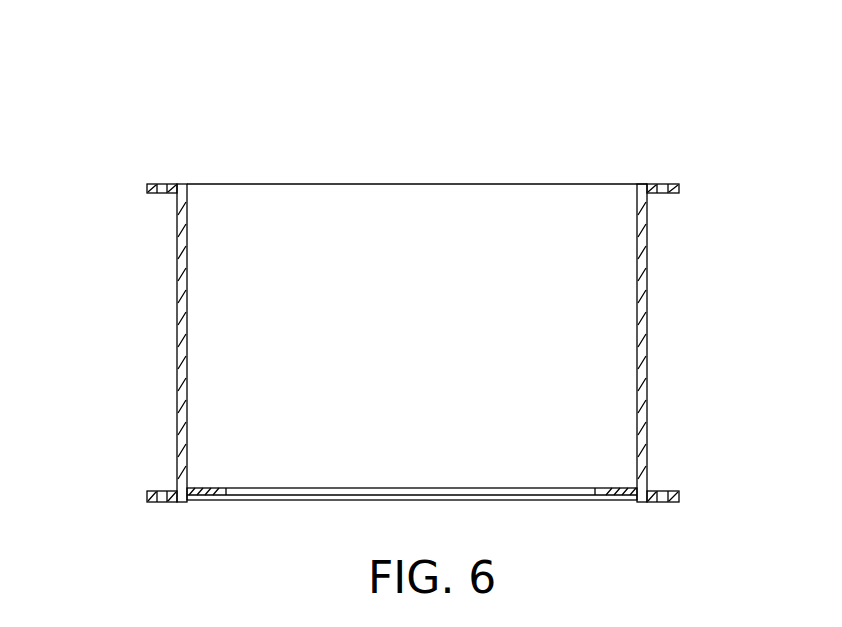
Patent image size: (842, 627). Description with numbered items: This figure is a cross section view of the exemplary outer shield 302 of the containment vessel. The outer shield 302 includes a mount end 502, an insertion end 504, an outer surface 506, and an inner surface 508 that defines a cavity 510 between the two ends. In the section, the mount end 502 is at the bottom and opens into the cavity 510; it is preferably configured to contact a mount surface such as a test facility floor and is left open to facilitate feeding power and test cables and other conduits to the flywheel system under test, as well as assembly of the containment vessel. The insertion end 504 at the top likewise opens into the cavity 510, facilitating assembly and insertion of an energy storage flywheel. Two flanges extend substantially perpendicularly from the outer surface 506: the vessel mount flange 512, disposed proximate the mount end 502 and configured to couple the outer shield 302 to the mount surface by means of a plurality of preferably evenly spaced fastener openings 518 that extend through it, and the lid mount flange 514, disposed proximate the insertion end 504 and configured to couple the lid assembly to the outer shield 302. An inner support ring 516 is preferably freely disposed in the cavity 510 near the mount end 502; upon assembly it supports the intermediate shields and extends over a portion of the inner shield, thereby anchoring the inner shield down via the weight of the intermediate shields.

The outer shield 302 is at (340, 124).
The mount end 502 is at (640, 502).
The insertion end 504 is at (640, 184).
The outer surface 506 is at (648, 333).
The inner surface 508 is at (188, 350).
The cavity 510 is at (430, 306).
The vessel mount flange 512 is at (672, 490).
The lid mount flange 514 is at (673, 194).
The inner support ring 516 is at (208, 487).
The fastener openings 518 is at (162, 490).